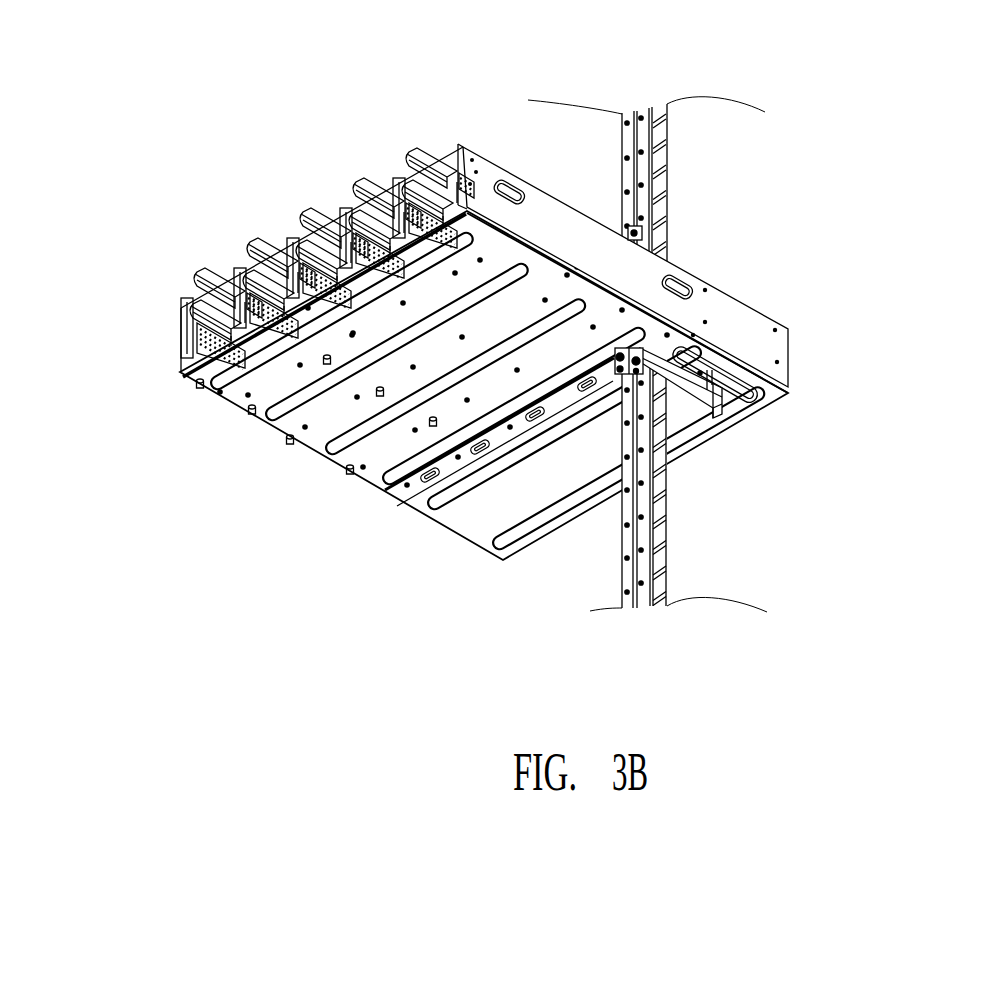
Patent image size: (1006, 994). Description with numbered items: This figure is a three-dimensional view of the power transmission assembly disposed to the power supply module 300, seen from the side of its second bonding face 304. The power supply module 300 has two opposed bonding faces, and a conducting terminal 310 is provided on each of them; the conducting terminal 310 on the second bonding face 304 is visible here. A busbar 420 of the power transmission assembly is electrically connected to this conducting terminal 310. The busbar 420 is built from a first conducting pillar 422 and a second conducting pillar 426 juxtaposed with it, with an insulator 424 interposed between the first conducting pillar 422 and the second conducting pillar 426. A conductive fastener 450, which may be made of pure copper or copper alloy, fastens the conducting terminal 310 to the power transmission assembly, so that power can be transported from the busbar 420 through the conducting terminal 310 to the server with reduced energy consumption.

The power supply module 300 is at (444, 338).
The second bonding face 304 is at (290, 427).
The conducting terminal 310 is at (682, 395).
The busbar 420 is at (708, 483).
The first conducting pillar 422 is at (640, 168).
The insulator 424 is at (602, 483).
The second conducting pillar 426 is at (628, 580).
The conductive fastener 450 is at (631, 232).